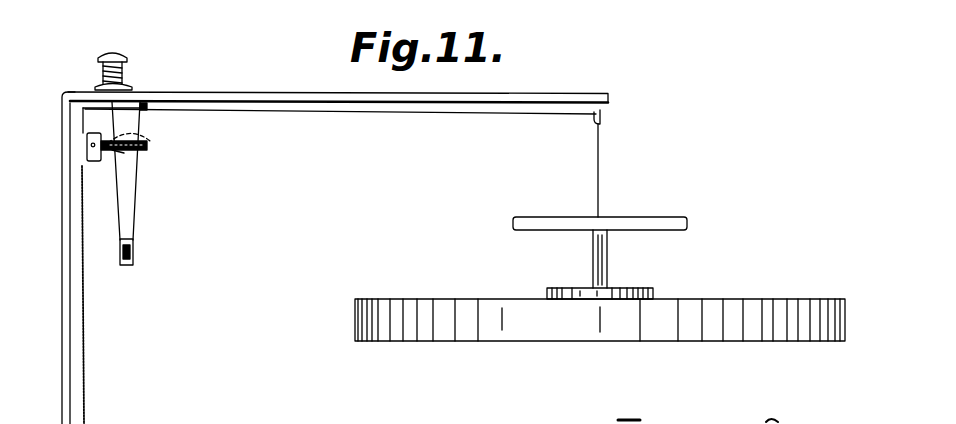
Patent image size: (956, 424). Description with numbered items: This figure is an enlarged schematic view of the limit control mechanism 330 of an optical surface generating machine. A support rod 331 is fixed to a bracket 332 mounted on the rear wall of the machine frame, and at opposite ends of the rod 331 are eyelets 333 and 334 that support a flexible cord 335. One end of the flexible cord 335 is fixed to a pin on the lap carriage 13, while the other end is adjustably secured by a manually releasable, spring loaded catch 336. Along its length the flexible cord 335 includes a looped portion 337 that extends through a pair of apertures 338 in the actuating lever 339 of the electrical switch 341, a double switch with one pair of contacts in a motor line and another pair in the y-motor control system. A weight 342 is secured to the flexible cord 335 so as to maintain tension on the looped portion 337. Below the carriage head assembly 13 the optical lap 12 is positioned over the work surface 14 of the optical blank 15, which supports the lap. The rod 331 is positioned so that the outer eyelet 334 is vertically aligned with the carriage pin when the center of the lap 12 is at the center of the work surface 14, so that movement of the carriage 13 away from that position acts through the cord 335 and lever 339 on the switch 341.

The limit control mechanism 330 is at (570, 89).
The support rod 331 is at (305, 92).
The bracket 332 is at (77, 352).
The eyelet 333 is at (148, 107).
The outer eyelet 334 is at (601, 112).
The flexible cord 335 is at (348, 115).
The spring loaded catch 336 is at (125, 84).
The looped portion 337 is at (136, 208).
The apertures 338 is at (124, 152).
The actuating lever 339 is at (150, 146).
The electrical switch 341 is at (90, 152).
The weight 342 is at (126, 266).
The carriage head assembly 13 is at (533, 216).
The optical lap 12 is at (549, 289).
The work surface 14 is at (400, 298).
The optical blank 15 is at (368, 322).